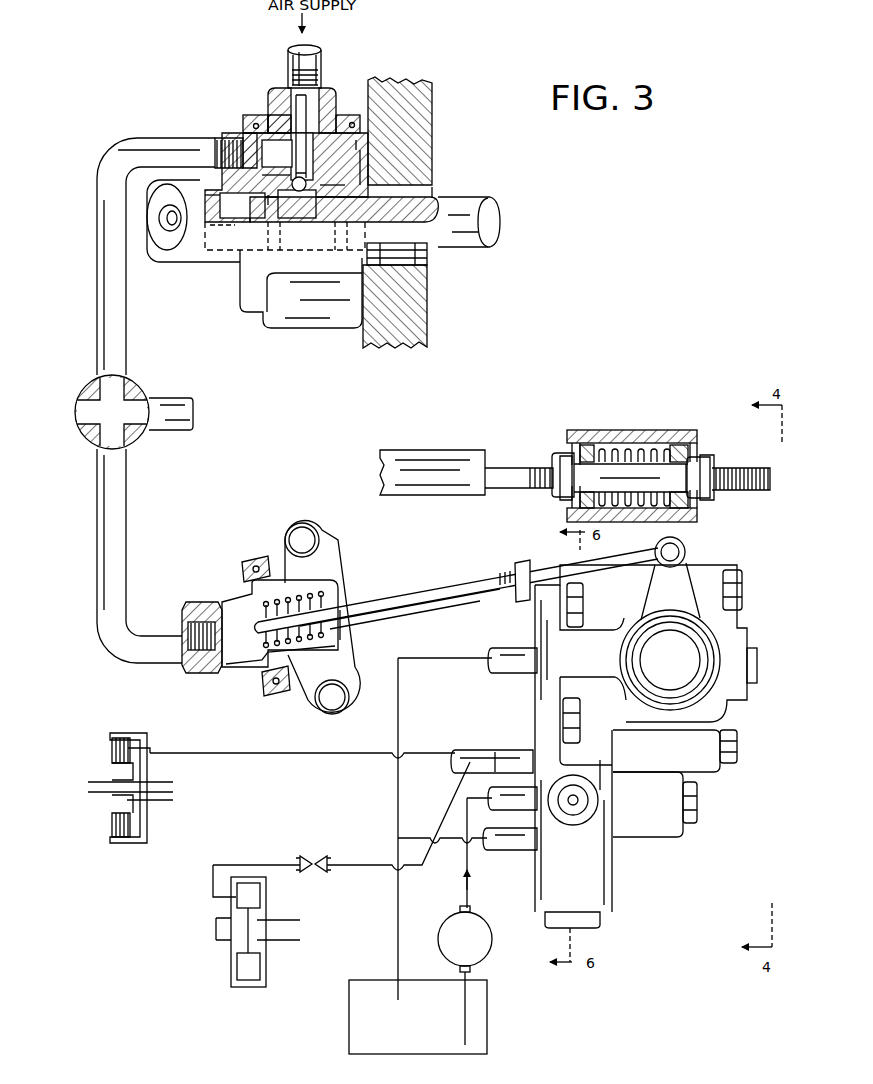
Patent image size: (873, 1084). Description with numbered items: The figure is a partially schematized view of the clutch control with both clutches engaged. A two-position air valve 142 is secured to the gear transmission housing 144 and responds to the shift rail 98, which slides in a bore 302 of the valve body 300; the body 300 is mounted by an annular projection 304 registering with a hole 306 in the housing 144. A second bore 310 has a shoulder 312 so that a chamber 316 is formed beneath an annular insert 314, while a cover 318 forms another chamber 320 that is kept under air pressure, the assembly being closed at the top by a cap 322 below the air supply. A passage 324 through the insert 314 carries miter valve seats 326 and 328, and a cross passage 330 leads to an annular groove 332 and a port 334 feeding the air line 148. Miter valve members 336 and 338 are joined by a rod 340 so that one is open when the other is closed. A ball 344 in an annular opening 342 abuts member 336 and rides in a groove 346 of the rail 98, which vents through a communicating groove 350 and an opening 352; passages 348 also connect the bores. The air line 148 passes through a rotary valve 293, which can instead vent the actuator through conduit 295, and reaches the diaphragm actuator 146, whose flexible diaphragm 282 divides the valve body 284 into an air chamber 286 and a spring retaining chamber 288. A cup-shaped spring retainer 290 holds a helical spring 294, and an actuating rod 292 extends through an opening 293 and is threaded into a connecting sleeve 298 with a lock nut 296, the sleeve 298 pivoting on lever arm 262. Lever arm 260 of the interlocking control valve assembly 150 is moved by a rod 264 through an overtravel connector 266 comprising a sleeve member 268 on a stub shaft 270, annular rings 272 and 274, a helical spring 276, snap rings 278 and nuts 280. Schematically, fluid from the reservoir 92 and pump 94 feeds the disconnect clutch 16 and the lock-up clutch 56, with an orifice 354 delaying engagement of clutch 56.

The disconnect clutch 16 is at (104, 822).
The lock-up clutch 56 is at (217, 960).
The reservoir 92 is at (420, 1050).
The fluid pump 94 is at (486, 948).
The shift rail 98 is at (480, 204).
The two-position air valve 142 is at (180, 92).
The gear transmission housing 144 is at (420, 112).
The diaphragm actuator 146 is at (222, 562).
The air line 148 is at (100, 262).
The interlocking control valve assembly 150 is at (630, 858).
The lever arm 260 is at (690, 570).
The lever arm 262 is at (680, 607).
The rod 264 is at (432, 450).
The overtravel connector 266 is at (680, 412).
The sleeve member 268 is at (626, 430).
The stub shaft 270 is at (658, 472).
The annular ring 272 is at (590, 442).
The annular ring 274 is at (685, 440).
The helical spring 276 is at (682, 506).
The snap rings 278 is at (565, 448).
The nuts 280 is at (555, 496).
The flexible diaphragm 282 is at (248, 598).
The valve body 284 is at (258, 672).
The air chamber 286 is at (217, 676).
The spring retaining chamber 288 is at (330, 585).
The spring retainer 290 is at (268, 580).
The actuating rod 292 is at (410, 592).
The rotary valve 293 is at (140, 440).
The helical spring 294 is at (292, 685).
The conduit 295 is at (190, 410).
The lock nut 296 is at (515, 565).
The connecting sleeve 298 is at (525, 590).
The valve body 300 is at (250, 268).
The bore 302 is at (425, 200).
The annular projection 304 is at (425, 262).
The hole 306 is at (425, 288).
The bore 310 is at (368, 160).
The shoulder 312 is at (232, 192).
The annular insert 314 is at (335, 125).
The chamber 316 is at (332, 180).
The cover 318 is at (328, 90).
The chamber 320 is at (294, 92).
The cap 322 is at (312, 48).
The passage 324 is at (262, 120).
The miter valve seat 326 is at (345, 200).
The miter valve seat 328 is at (306, 105).
The passage 330 is at (370, 146).
The annular groove 332 is at (258, 130).
The port 334 is at (240, 134).
The miter valve member 336 is at (265, 196).
The miter valve member 338 is at (275, 110).
The rod 340 is at (268, 172).
The annular opening 342 is at (320, 238).
The ball 344 is at (300, 192).
The groove 346 is at (226, 232).
The passages 348 is at (315, 236).
The communicating groove 350 is at (200, 168).
The opening 352 is at (160, 232).
The orifice 354 is at (306, 856).